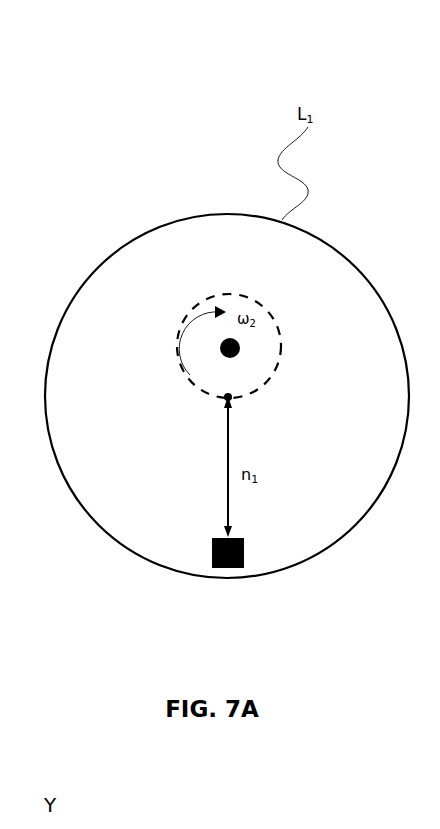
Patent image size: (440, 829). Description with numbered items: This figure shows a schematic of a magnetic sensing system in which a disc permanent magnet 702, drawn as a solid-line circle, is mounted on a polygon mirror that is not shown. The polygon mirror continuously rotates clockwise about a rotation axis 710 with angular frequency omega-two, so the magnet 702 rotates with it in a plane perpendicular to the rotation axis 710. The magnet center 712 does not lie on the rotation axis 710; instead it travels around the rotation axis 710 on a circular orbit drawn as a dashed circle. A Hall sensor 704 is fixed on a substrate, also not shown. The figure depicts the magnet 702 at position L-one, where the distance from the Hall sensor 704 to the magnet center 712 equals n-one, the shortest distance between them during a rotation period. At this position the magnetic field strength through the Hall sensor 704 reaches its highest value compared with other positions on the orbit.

The disc permanent magnet 702 is at (227, 396).
The rotation axis 710 is at (240, 350).
The magnet center 712 is at (227, 392).
The Hall sensor 704 is at (211, 553).